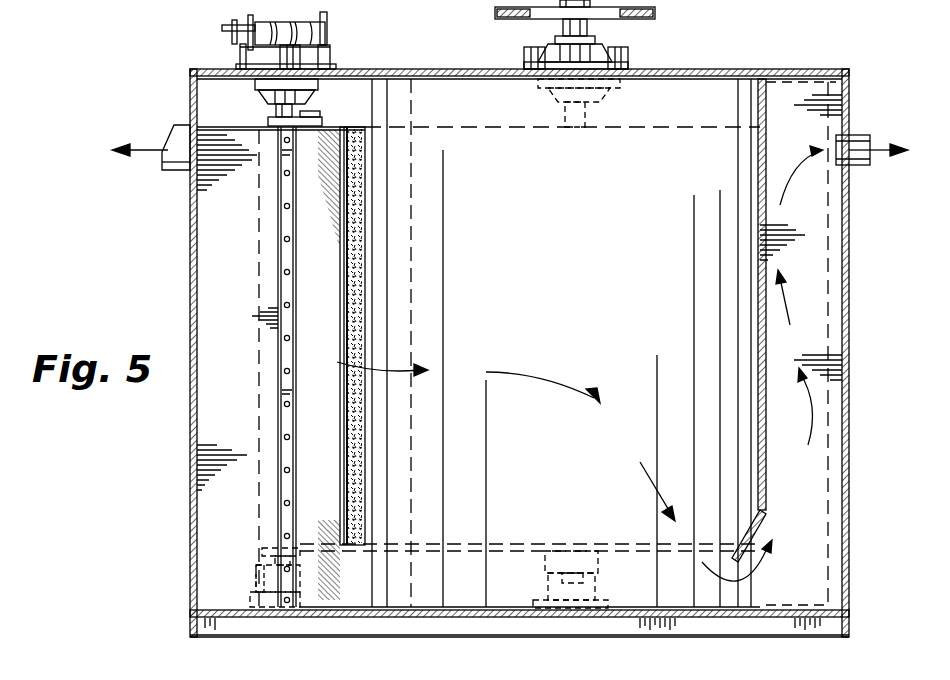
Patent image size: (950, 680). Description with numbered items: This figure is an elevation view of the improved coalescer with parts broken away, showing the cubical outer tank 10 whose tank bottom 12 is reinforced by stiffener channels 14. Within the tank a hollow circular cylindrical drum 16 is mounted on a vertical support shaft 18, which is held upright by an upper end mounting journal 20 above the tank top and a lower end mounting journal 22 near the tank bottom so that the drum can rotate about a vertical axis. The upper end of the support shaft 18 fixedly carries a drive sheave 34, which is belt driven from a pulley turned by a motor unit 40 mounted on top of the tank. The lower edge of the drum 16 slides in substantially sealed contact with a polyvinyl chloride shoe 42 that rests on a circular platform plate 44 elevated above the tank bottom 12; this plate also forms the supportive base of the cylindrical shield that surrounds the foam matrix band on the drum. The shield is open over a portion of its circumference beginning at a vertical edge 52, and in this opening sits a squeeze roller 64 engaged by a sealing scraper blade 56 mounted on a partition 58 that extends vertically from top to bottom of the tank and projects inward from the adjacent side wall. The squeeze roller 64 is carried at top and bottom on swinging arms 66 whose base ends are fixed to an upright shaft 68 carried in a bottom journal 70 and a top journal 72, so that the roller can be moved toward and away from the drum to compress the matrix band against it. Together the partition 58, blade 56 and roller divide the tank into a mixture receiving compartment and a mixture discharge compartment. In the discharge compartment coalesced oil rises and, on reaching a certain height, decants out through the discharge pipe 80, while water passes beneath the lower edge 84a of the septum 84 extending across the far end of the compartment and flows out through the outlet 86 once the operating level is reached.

The outer tank 10 is at (192, 228).
The tank bottom 12 is at (200, 599).
The stiffener channels 14 is at (220, 620).
The drum 16 is at (687, 118).
The support shaft 18 is at (586, 29).
The upper end mounting journal 20 is at (620, 62).
The lower end mounting journal 22 is at (605, 590).
The drive sheave 34 is at (532, 20).
The motor unit 40 is at (528, 52).
The polyvinyl chloride shoe 42 is at (446, 535).
The platform plate 44 is at (455, 553).
The vertical edge 52 is at (357, 410).
The scraper blade 56 is at (342, 228).
The partition 58 is at (212, 284).
The squeeze roller 64 is at (348, 130).
The swinging arms 66 is at (285, 109).
The upright shaft 68 is at (290, 59).
The bottom journal 70 is at (262, 581).
The top journal 72 is at (265, 95).
The discharge pipe 80 is at (176, 128).
The septum 84 is at (760, 371).
The lower edge of septum 84a is at (737, 558).
The outlet 86 is at (861, 136).